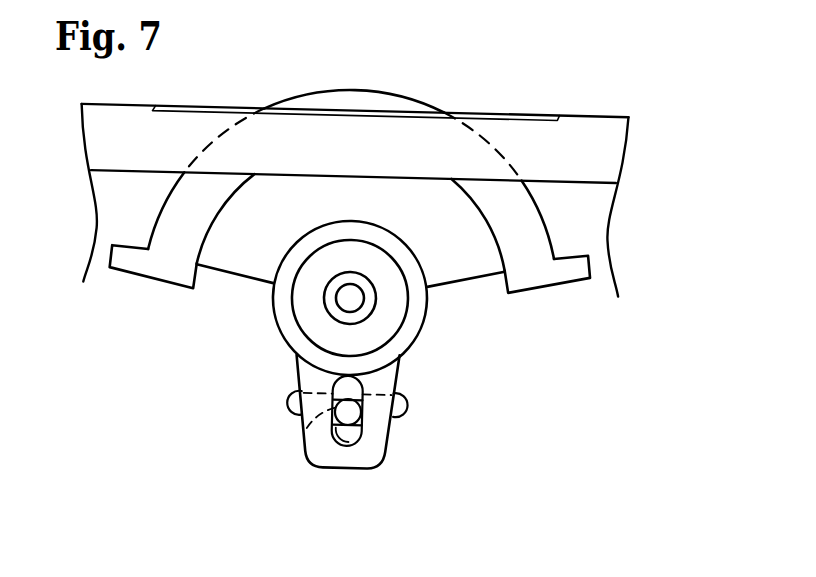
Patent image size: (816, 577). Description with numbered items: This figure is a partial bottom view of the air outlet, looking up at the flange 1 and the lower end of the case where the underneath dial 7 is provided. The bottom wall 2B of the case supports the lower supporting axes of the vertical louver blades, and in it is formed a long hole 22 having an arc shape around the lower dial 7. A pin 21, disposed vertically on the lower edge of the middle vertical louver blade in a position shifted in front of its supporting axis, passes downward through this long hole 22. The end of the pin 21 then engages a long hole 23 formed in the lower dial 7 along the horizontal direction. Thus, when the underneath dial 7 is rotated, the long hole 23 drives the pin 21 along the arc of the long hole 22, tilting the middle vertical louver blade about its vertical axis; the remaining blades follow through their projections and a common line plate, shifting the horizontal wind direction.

The flange 1 is at (587, 122).
The underneath dial 7 is at (355, 100).
The bottom wall 2B is at (522, 384).
The pin 21 is at (307, 428).
The long hole 22 is at (372, 423).
The long hole 23 is at (350, 430).